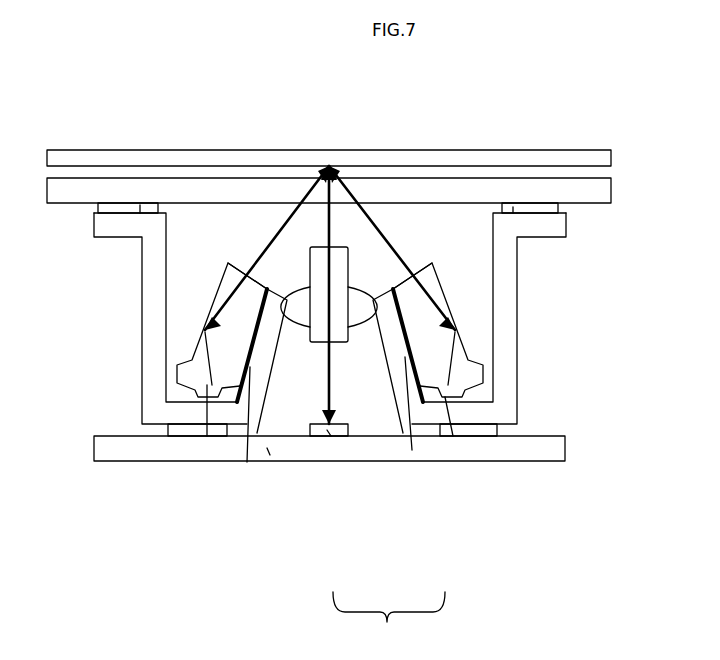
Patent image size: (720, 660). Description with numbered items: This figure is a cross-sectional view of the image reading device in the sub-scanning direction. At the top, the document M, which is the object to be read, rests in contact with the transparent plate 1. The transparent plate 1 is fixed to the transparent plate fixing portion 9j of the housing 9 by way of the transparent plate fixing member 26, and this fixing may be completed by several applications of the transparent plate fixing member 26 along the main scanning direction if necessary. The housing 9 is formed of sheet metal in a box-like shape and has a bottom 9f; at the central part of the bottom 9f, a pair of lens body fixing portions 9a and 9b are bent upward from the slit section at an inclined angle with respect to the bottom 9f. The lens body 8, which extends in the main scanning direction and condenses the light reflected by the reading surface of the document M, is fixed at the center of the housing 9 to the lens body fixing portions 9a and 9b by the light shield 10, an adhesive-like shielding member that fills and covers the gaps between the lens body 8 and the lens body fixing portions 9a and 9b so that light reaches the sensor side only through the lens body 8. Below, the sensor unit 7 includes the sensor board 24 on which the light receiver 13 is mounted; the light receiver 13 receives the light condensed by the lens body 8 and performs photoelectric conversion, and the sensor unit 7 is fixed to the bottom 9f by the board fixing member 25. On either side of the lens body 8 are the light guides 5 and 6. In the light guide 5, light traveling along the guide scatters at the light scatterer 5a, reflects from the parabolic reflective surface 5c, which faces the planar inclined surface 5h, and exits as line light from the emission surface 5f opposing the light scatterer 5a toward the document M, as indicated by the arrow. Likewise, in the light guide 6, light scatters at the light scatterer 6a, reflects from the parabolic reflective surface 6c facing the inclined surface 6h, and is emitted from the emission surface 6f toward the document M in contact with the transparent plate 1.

The document M is at (583, 160).
The transparent plate 1 is at (593, 192).
The transparent plate fixing member 26 is at (122, 208).
The housing 9 is at (153, 259).
The transparent plate fixing portion 9j is at (140, 205).
The bottom 9f is at (216, 428).
The lens body fixing portion 9a is at (247, 462).
The lens body fixing portion 9b is at (412, 450).
The board fixing member 25 is at (485, 430).
The lens body 8 is at (338, 337).
The light shield 10 is at (300, 300).
The light guide 6 is at (207, 382).
The reflective surface 6c is at (207, 300).
The inclined surface 6h is at (243, 357).
The emission surface 6f is at (232, 260).
The light scatterer 6a is at (207, 436).
The light guide 5 is at (453, 382).
The reflective surface 5c is at (453, 298).
The inclined surface 5h is at (418, 357).
The emission surface 5f is at (430, 262).
The light scatterer 5a is at (453, 436).
The light receiver 13 is at (327, 430).
The sensor board 24 is at (267, 448).
The sensor unit 7 is at (389, 621).